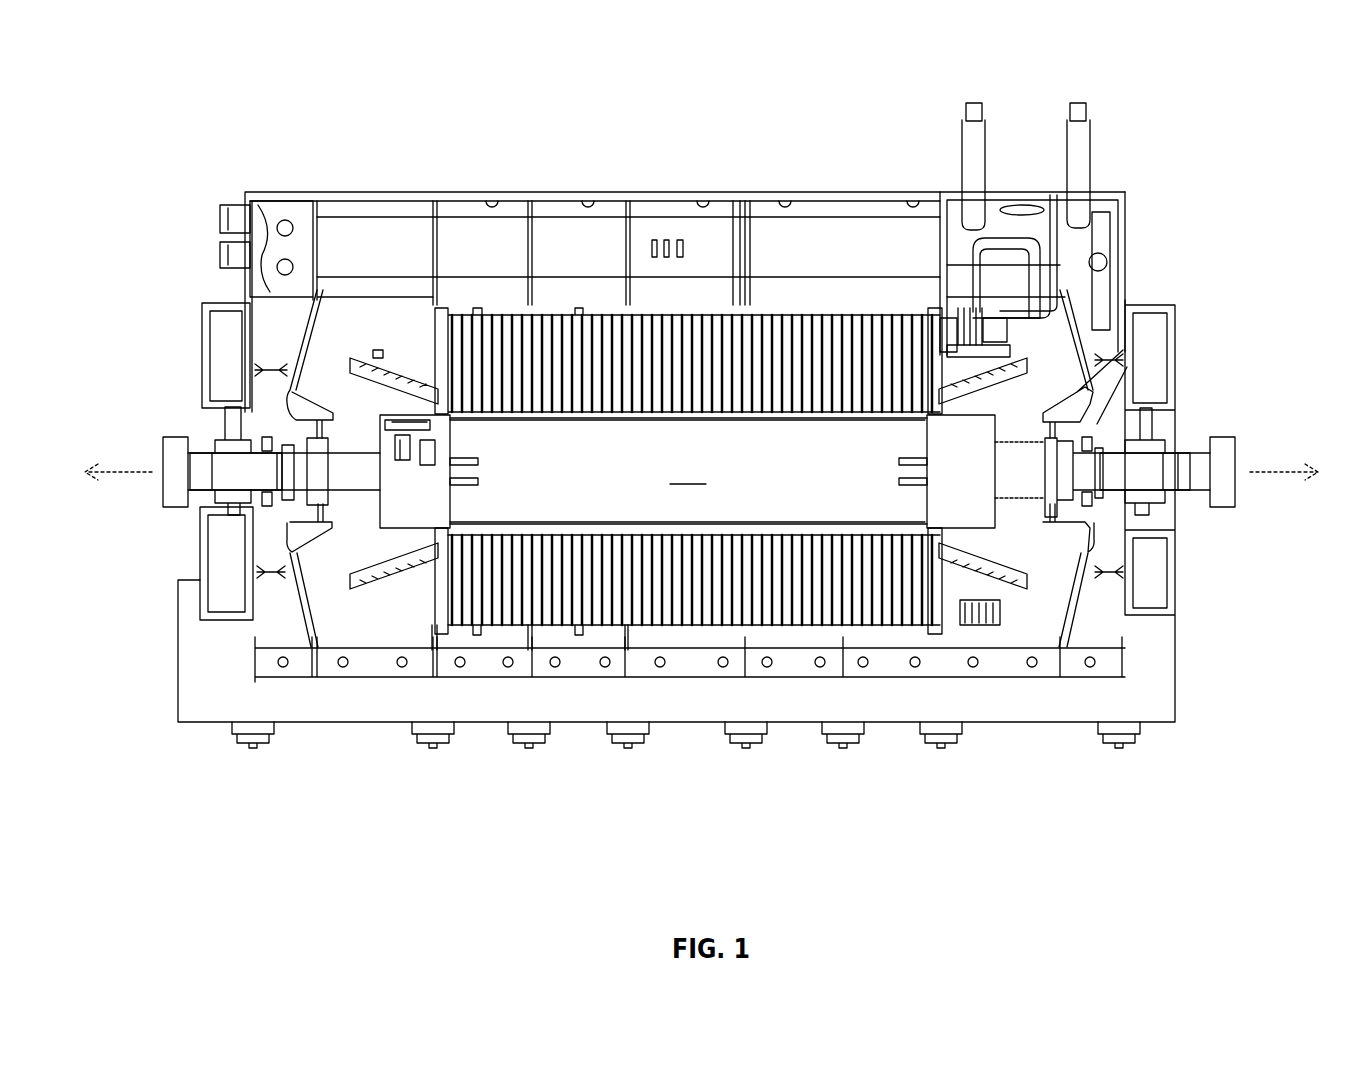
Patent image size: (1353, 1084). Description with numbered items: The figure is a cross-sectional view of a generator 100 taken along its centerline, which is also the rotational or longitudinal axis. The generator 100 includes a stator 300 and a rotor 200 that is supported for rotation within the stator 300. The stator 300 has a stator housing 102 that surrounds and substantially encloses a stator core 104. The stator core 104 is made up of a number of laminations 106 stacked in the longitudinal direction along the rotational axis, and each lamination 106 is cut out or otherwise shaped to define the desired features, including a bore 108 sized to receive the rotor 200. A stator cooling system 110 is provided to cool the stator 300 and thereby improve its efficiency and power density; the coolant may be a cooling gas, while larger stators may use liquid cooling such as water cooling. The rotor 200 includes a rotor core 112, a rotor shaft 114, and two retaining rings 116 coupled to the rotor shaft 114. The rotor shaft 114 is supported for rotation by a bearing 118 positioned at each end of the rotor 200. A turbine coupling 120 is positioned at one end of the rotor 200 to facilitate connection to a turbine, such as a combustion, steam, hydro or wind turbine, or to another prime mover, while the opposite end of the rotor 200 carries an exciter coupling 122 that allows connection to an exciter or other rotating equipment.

The generator 100 is at (1152, 96).
The stator housing 102 is at (733, 193).
The stator core 104 is at (517, 627).
The laminations 106 is at (760, 600).
The bore 108 is at (845, 415).
The stator cooling system 110 is at (993, 335).
The rotor core 112 is at (618, 498).
The rotor shaft 114 is at (352, 485).
The retaining rings 116 is at (430, 510).
The bearing 118 is at (232, 497).
The turbine coupling 120 is at (1225, 490).
The exciter coupling 122 is at (177, 455).
The rotor 200 is at (688, 471).
The stator 300 is at (503, 247).